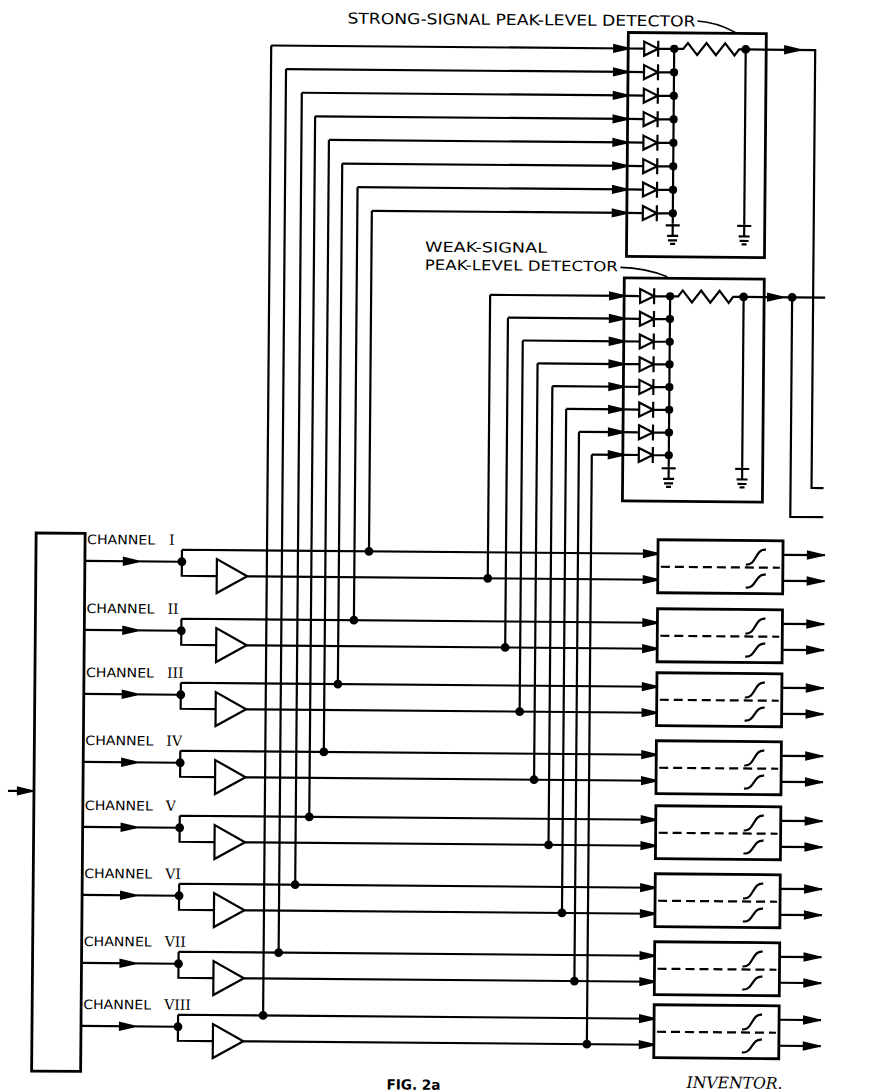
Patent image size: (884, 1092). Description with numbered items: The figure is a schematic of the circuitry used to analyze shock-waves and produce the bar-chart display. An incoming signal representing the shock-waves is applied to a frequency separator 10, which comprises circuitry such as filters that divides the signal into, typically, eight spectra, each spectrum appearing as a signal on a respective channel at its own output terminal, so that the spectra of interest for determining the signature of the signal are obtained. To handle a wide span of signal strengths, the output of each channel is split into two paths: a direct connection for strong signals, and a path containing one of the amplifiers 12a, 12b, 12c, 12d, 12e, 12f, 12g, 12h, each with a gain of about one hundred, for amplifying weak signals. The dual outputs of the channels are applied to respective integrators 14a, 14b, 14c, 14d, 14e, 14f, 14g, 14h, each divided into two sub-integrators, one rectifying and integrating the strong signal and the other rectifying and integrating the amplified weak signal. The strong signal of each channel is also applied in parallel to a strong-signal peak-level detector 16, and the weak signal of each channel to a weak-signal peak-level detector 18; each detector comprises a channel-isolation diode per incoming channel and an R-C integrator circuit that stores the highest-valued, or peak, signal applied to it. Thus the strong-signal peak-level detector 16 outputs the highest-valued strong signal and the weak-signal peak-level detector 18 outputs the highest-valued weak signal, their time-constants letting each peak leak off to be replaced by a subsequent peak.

The frequency separator 10 is at (63, 536).
The amplifier 12a is at (228, 561).
The amplifier 12b is at (234, 636).
The amplifier 12c is at (234, 700).
The amplifier 12d is at (234, 768).
The amplifier 12e is at (234, 833).
The amplifier 12f is at (234, 901).
The amplifier 12g is at (234, 969).
The amplifier 12h is at (234, 1032).
The integrator 14a is at (668, 539).
The integrator 14b is at (668, 608).
The integrator 14c is at (668, 672).
The integrator 14d is at (668, 740).
The integrator 14e is at (668, 805).
The integrator 14f is at (668, 873).
The integrator 14g is at (668, 941).
The integrator 14h is at (668, 1004).
The strong-signal peak-level detector 16 is at (696, 144).
The weak-signal peak-level detector 18 is at (693, 390).